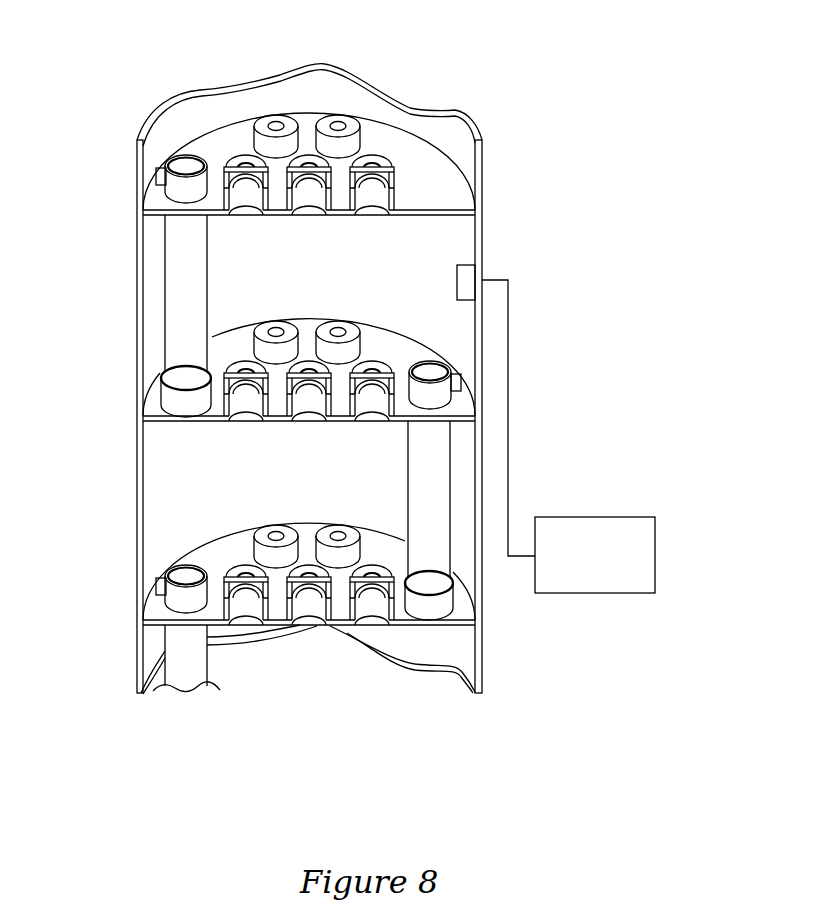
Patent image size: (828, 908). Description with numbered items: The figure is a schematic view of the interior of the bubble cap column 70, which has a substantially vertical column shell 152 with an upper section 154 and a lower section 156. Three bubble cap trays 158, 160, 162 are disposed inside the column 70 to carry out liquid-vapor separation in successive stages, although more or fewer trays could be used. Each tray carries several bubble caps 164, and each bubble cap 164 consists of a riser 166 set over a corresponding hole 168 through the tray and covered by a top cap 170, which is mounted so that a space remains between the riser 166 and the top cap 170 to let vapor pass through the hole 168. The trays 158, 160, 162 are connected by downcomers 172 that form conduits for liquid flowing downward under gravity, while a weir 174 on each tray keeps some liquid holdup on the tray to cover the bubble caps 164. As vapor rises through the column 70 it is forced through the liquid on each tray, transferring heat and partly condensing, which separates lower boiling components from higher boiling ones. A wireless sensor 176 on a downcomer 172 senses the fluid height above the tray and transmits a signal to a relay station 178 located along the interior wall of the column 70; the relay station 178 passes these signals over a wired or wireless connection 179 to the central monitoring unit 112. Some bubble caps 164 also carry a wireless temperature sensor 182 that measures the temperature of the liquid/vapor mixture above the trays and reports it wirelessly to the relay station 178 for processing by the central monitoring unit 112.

The bubble cap column 70 is at (428, 57).
The central monitoring unit 112 is at (598, 595).
The column shell 152 is at (447, 132).
The upper section 154 is at (510, 153).
The lower section 156 is at (495, 662).
The bubble cap tray 158 is at (225, 137).
The bubble cap tray 160 is at (238, 340).
The bubble cap tray 162 is at (228, 552).
The bubble cap 164 is at (273, 108).
The riser 166 is at (352, 200).
The hole 168 is at (371, 203).
The top cap 170 is at (382, 162).
The downcomer 172 is at (177, 299).
The weir 174 is at (181, 165).
The wireless sensor 176 is at (160, 177).
The relay station 178 is at (465, 275).
The wired or wireless connection 179 is at (510, 432).
The wireless temperature sensor 182 is at (339, 127).